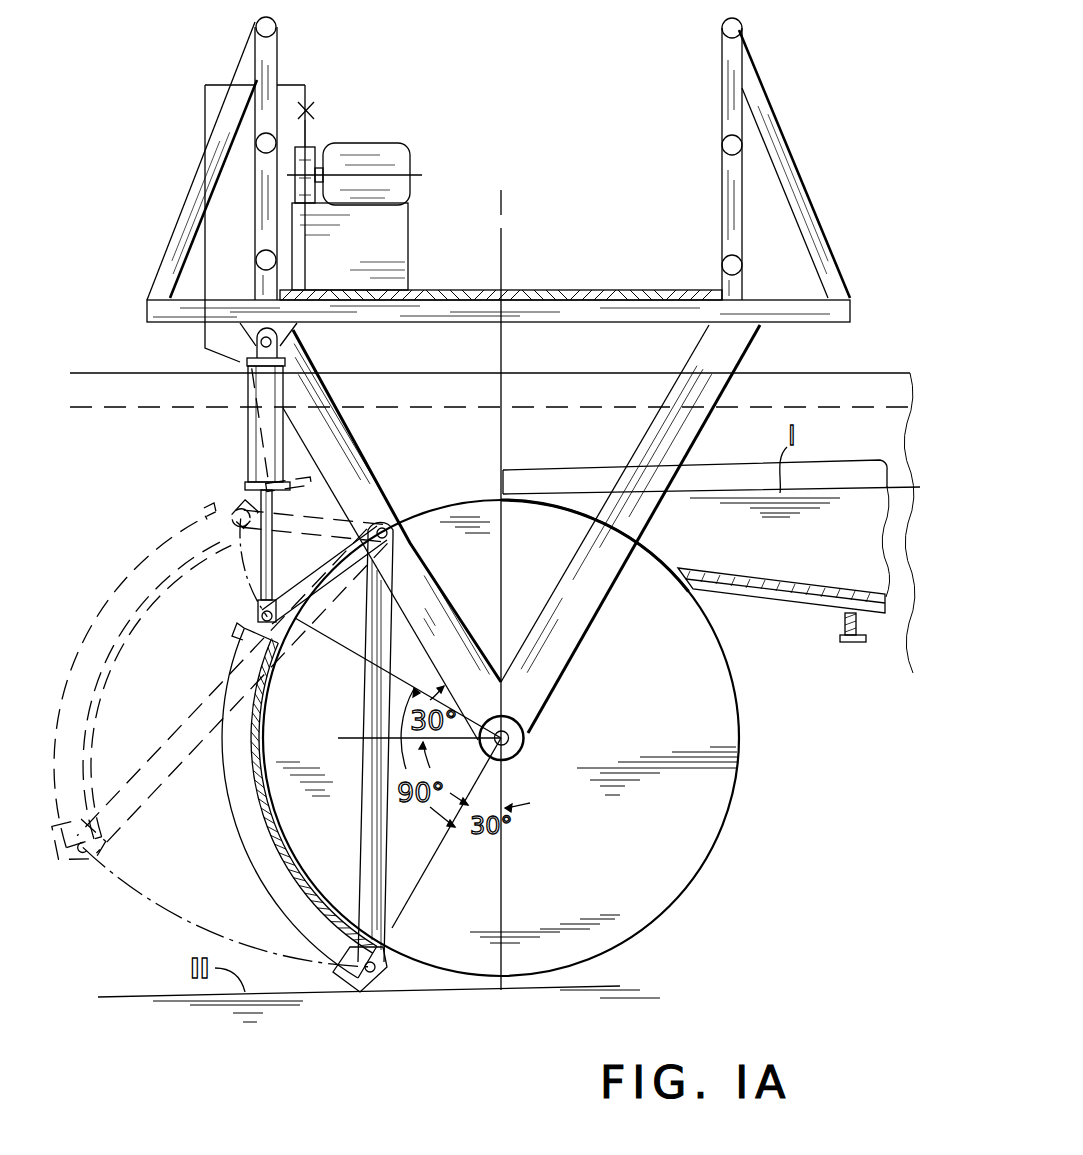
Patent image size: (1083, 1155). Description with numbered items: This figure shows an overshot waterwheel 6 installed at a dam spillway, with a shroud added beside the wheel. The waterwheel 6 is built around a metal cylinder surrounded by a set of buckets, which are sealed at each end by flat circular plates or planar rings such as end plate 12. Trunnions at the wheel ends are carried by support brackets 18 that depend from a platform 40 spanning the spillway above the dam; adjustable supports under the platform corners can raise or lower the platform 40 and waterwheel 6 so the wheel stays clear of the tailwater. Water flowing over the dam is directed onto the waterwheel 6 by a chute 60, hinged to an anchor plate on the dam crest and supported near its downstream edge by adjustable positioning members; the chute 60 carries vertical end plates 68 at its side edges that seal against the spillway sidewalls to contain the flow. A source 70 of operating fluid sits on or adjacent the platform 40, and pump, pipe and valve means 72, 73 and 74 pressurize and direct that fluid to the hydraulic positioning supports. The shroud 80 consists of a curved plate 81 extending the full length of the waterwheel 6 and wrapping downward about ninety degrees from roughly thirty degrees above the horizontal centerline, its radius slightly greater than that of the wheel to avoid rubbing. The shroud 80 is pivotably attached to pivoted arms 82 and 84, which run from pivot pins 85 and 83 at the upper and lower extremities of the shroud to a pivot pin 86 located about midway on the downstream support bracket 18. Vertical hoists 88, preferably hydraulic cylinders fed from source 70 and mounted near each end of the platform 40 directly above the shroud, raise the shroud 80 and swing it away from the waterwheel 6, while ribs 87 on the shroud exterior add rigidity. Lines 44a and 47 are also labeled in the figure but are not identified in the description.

The overshot waterwheel 6 is at (734, 692).
The planar ring 12 is at (680, 880).
The support bracket 18 is at (372, 457).
The platform 40 is at (680, 290).
The water level line 44a is at (810, 407).
The water surface 47 is at (810, 373).
The chute 60 is at (812, 564).
The vertical end plates 68 is at (823, 468).
The source of operating fluid 70 is at (410, 248).
The pump means 72 is at (393, 144).
The pipe means 73 is at (205, 102).
The valve means 74 is at (312, 108).
The shroud 80 is at (223, 761).
The curved plate 81 is at (262, 806).
The pivoted arm 82 is at (360, 700).
The pivot pin 83 is at (380, 975).
The pivoted arm 84 is at (333, 556).
The pivot pin 85 is at (262, 615).
The pivot pin 86 is at (390, 518).
The ribs 87 is at (163, 538).
The vertical hoist 88 is at (257, 425).